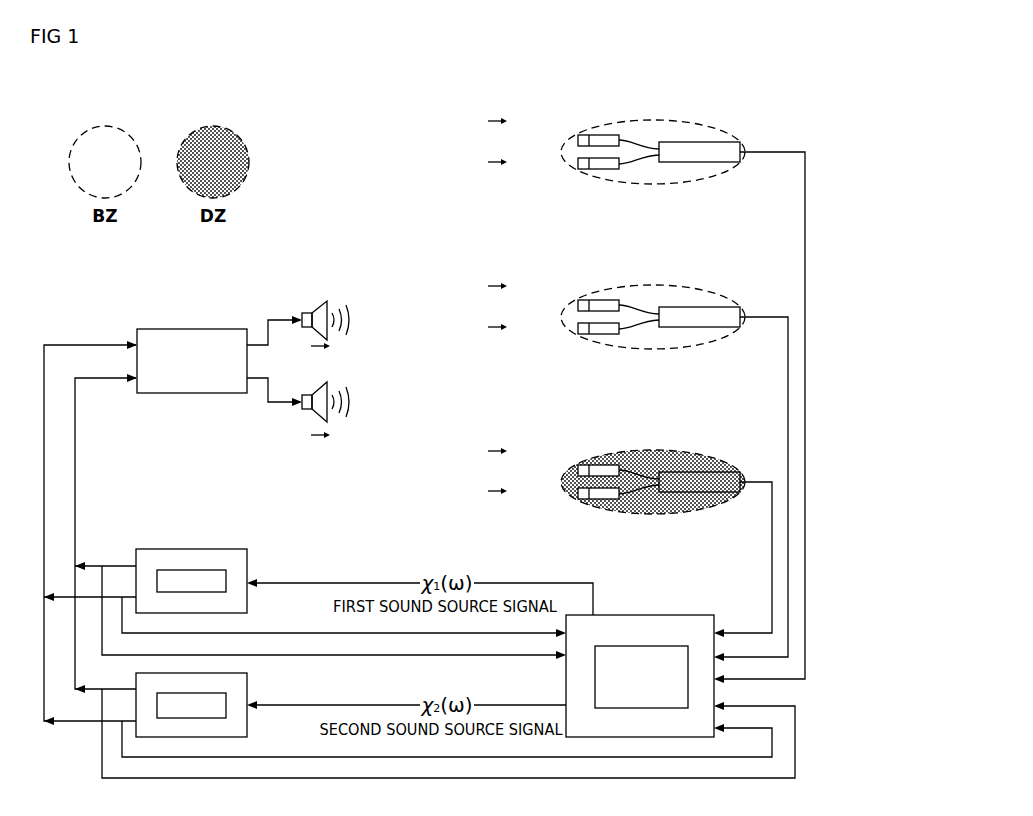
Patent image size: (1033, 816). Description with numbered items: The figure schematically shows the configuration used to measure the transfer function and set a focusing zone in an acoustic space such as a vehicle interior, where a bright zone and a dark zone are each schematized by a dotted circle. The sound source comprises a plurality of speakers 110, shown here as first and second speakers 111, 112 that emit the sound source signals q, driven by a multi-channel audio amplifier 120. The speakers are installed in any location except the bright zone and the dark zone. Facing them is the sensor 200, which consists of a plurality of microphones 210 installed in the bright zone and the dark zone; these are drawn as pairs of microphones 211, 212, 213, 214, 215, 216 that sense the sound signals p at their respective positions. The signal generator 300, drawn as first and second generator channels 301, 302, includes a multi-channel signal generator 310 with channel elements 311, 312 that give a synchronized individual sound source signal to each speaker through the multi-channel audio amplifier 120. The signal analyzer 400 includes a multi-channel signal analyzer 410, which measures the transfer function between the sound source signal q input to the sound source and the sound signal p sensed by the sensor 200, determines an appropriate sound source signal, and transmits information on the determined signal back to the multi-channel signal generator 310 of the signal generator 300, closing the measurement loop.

The speaker 110 is at (385, 280).
The first speaker 111 is at (302, 313).
The second speaker 112 is at (302, 409).
The multi-channel audio amplifier 120 is at (192, 361).
The sensor 200 is at (472, 100).
The microphone 210 is at (683, 390).
The first microphone 211 is at (598, 121).
The second microphone 212 is at (598, 182).
The third microphone 213 is at (598, 286).
The fourth microphone 214 is at (598, 347).
The fifth microphone 215 is at (598, 451).
The sixth microphone 216 is at (598, 512).
The signal generator 300 is at (145, 677).
The first filter 301 is at (191, 581).
The second filter 302 is at (191, 705).
The multi-channel signal generator 310 is at (220, 700).
The first filter coefficient 311 is at (191, 581).
The second filter coefficient 312 is at (191, 705).
The signal analyzer 400 is at (640, 676).
The multi-channel signal analyzer 410 is at (641, 677).